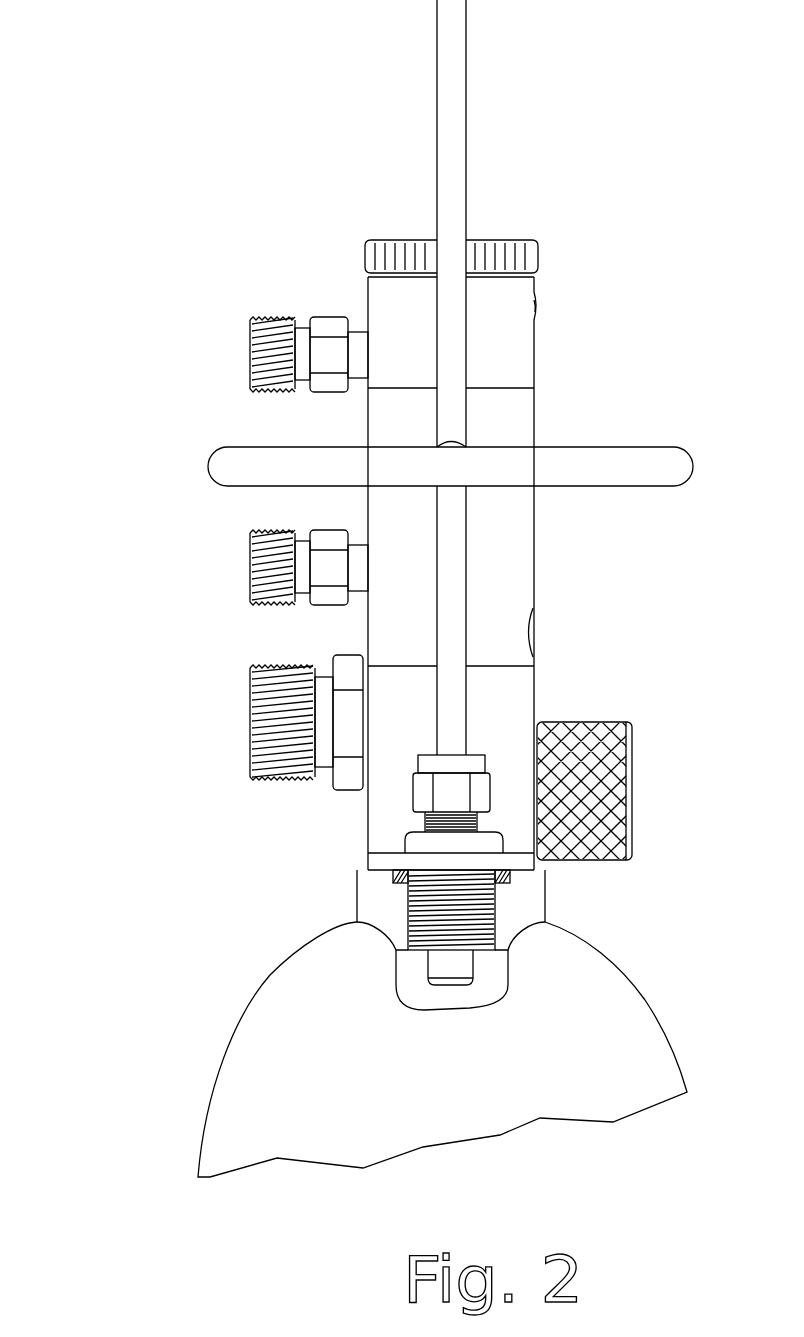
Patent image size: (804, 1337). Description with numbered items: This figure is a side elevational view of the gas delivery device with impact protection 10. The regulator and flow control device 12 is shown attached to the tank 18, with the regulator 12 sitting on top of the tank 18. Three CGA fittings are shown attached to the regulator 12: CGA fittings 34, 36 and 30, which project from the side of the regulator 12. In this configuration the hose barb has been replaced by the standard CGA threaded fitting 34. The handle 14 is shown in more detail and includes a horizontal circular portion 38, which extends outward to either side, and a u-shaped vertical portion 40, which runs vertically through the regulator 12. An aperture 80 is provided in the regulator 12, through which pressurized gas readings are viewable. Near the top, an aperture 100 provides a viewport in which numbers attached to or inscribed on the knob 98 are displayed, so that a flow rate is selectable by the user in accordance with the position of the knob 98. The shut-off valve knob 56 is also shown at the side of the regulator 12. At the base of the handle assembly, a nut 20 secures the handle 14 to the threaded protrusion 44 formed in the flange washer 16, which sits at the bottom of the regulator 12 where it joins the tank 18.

The gas delivery device with impact protection 10 is at (150, 958).
The regulator and flow control device 12 is at (619, 562).
The handle 14 is at (669, 436).
The flange washer 16 is at (363, 860).
The tank 18 is at (643, 992).
The nut 20 is at (473, 753).
The CGA fitting 30 is at (250, 690).
The CGA threaded fitting 34 is at (262, 317).
The CGA fitting 36 is at (262, 533).
The horizontal circular portion 38 is at (695, 467).
The u-shaped vertical portion 40 is at (466, 550).
The threaded protrusion 44 is at (427, 826).
The shut-off valve knob 56 is at (632, 740).
The aperture 80 is at (533, 645).
The knob 98 is at (538, 241).
The aperture 100 is at (535, 308).